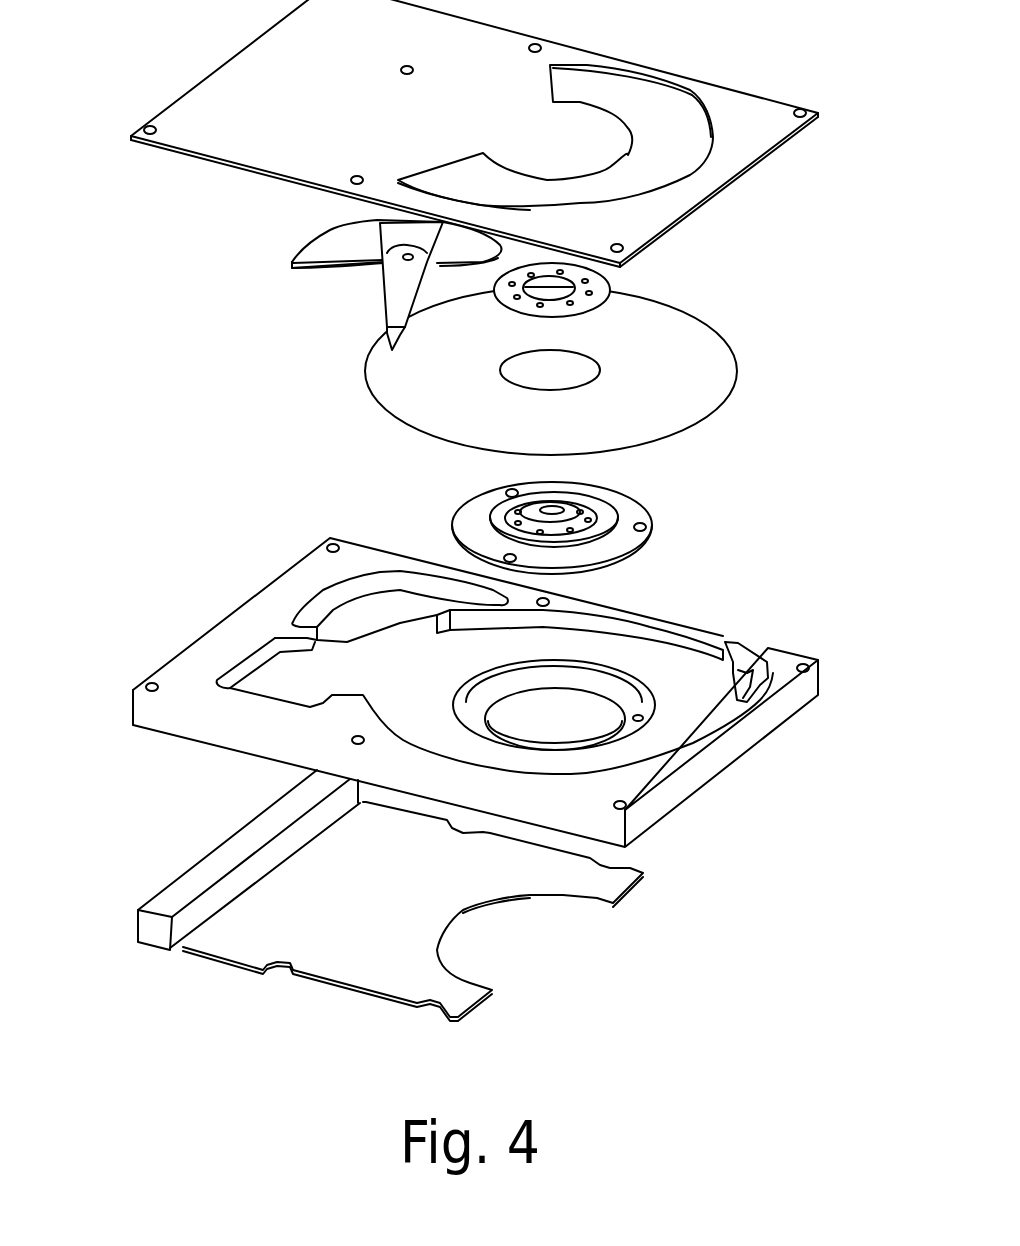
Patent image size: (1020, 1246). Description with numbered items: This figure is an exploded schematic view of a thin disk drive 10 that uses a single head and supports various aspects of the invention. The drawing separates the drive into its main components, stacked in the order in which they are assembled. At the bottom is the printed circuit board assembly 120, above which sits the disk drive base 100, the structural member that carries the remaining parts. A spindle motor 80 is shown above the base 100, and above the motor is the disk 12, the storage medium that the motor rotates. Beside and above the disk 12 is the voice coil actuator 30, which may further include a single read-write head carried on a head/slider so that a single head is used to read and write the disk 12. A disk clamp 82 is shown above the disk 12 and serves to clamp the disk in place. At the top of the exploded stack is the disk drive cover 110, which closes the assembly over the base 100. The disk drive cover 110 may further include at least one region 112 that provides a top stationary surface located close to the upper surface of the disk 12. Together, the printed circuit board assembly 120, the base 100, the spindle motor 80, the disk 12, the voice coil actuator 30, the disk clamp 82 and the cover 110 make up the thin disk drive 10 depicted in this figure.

The thin disk drive 10 is at (90, 0).
The disk 12 is at (736, 357).
The voice coil actuator 30 is at (292, 218).
The spindle motor 80 is at (634, 502).
The disk clamp 82 is at (606, 284).
The disk drive base 100 is at (763, 728).
The disk drive cover 110 is at (737, 97).
The region 112 is at (620, 90).
The printed circuit board assembly 120 is at (642, 882).